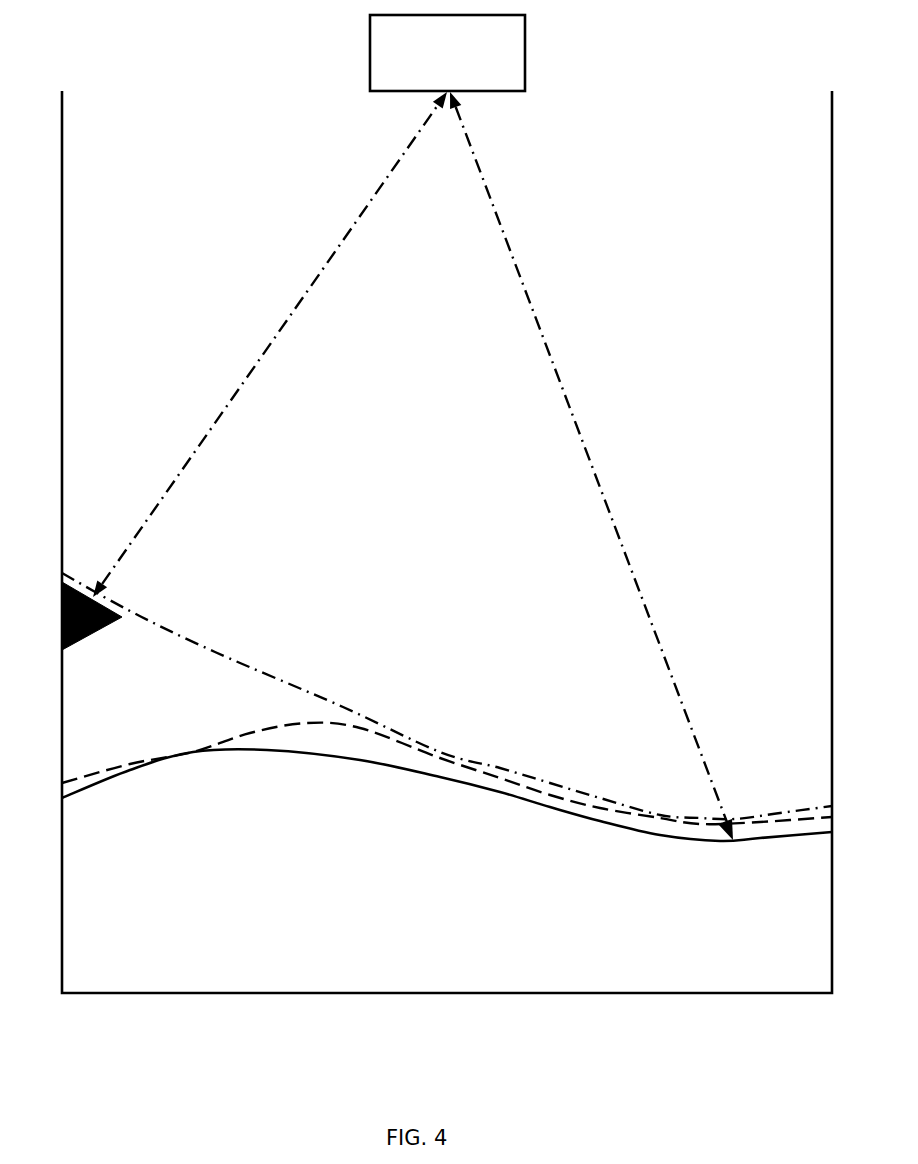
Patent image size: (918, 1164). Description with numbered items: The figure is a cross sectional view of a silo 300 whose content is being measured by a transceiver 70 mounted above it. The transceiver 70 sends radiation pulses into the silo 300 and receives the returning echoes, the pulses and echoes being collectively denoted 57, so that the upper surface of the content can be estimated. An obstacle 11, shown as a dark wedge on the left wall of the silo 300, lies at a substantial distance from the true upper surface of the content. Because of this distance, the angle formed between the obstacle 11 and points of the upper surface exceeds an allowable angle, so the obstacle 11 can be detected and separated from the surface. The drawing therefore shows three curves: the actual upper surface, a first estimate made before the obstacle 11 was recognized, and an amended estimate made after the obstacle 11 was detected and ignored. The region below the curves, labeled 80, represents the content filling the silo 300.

The obstacle 11 is at (62, 608).
The radiation pulses and echoes 57 is at (522, 288).
The transceiver 70 is at (446, 72).
The medium 80 is at (756, 932).
The silo 300 is at (341, 995).